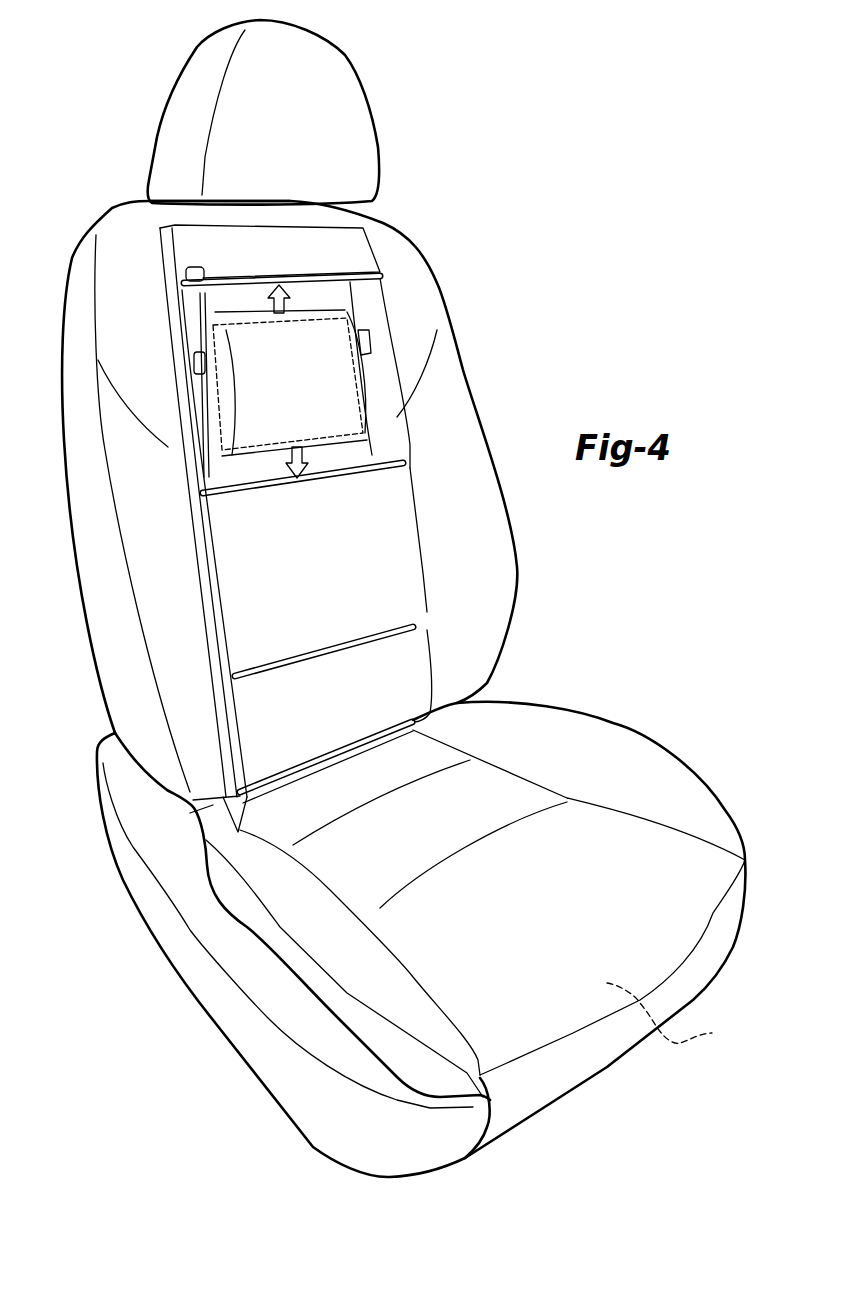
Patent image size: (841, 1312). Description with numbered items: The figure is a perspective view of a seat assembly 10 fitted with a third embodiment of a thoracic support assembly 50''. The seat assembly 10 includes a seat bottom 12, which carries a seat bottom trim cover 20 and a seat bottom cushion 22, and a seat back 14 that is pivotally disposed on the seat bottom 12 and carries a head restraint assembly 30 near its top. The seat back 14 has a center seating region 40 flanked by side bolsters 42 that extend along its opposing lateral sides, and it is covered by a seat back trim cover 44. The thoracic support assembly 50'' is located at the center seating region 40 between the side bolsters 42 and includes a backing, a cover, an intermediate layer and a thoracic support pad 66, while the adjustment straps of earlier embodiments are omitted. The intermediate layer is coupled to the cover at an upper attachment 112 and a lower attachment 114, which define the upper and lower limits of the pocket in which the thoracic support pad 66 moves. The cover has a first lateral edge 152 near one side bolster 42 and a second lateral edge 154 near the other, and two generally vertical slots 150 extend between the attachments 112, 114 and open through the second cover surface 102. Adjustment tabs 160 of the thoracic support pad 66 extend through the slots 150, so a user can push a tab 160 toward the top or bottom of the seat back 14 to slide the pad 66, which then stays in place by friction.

The seat assembly 10 is at (386, 601).
The seat bottom 12 is at (421, 923).
The seat back 14 is at (319, 477).
The seat bottom trim cover 20 is at (503, 913).
The seat bottom cushion 22 is at (712, 1033).
The head restraint assembly 30 is at (275, 114).
The center seating region 40 is at (287, 528).
The side bolsters 42 is at (180, 637).
The seat back trim cover 44 is at (400, 247).
The thoracic support assembly 50'' is at (487, 667).
The thoracic support pad 66 is at (326, 478).
The second cover surface 102 is at (383, 370).
The upper attachment 112 is at (203, 285).
The lower attachment 114 is at (245, 504).
The slots 150 is at (205, 407).
The first lateral edge 152 is at (207, 573).
The second lateral edge 154 is at (425, 578).
The adjustment tabs 160 is at (195, 367).